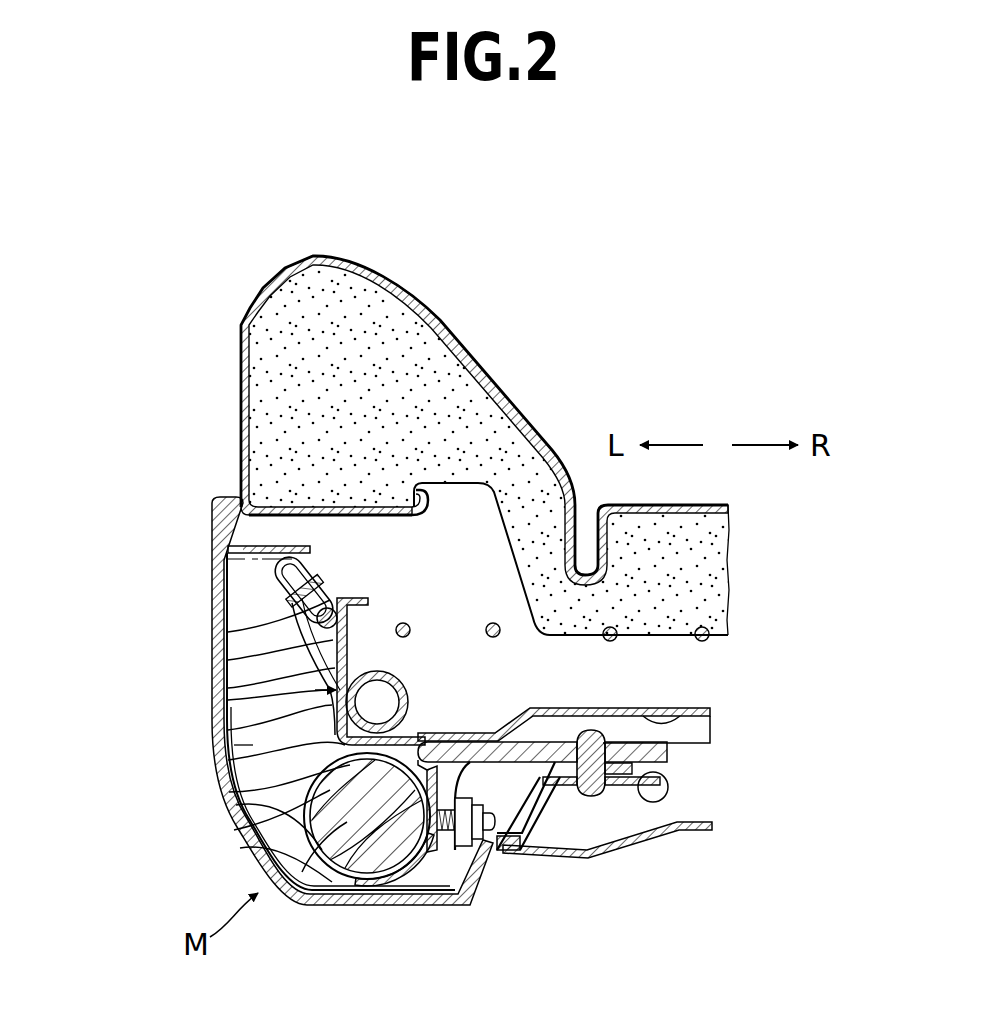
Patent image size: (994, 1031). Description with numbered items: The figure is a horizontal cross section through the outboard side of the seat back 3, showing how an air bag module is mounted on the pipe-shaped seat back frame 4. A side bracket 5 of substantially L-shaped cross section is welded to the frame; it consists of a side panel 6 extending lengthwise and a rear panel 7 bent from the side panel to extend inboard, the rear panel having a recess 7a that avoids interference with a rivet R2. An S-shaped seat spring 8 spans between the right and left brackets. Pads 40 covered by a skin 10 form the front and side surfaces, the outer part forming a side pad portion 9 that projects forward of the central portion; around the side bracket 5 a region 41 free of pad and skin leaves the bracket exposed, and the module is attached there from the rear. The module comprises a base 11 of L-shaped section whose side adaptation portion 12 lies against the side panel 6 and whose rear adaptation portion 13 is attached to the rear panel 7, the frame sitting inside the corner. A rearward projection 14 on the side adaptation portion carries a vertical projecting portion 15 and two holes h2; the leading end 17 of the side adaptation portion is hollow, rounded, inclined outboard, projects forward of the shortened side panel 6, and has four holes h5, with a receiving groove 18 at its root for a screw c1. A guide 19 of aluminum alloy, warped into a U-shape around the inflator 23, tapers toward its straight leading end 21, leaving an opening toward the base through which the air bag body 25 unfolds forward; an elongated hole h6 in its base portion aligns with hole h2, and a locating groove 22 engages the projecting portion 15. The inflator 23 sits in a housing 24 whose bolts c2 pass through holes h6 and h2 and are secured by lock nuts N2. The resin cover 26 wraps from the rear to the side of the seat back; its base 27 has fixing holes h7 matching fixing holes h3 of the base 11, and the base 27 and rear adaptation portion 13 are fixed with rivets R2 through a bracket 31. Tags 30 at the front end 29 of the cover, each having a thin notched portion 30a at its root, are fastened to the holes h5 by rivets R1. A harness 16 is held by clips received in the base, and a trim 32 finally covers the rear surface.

The seat back 3 is at (548, 345).
The seat back frame 4 is at (295, 735).
The side bracket 5 is at (232, 727).
The side panel 6 is at (228, 676).
The rear panel 7 is at (712, 714).
The recess 7a is at (665, 722).
The seat spring 8 is at (493, 637).
The side pad portion 9 is at (365, 292).
The skin 10 is at (445, 315).
The base 11 is at (348, 870).
The side adaptation portion 12 is at (228, 700).
The rear adaptation portion 13 is at (668, 752).
The projection 14 is at (437, 852).
The projecting portion 15 is at (408, 737).
The harness 16 is at (655, 803).
The leading end 17 is at (227, 560).
The receiving groove 18 is at (347, 620).
The guide 19 is at (258, 870).
The leading end 21 is at (212, 722).
The locating groove 22 is at (455, 762).
The inflator 23 is at (312, 860).
The housing 24 is at (410, 906).
The air bag body 25 is at (227, 748).
The cover 26 is at (232, 828).
The base 27 is at (662, 770).
The front end 29 is at (222, 497).
The tag 30 is at (220, 510).
The notched portion 30a is at (228, 548).
The bracket 31 is at (590, 797).
The trim 32 is at (712, 826).
The pad 40 is at (541, 485).
The region 41 is at (547, 670).
The screw c1 is at (228, 660).
The bolts c2 is at (505, 850).
The holes h2 is at (485, 870).
The fixing holes h3 is at (592, 731).
The holes h5 is at (227, 590).
The elongated hole h6 is at (372, 870).
The fixing holes h7 is at (603, 792).
The lock nuts N2 is at (490, 852).
The rivets R1 is at (318, 570).
The rivets R2 is at (638, 795).